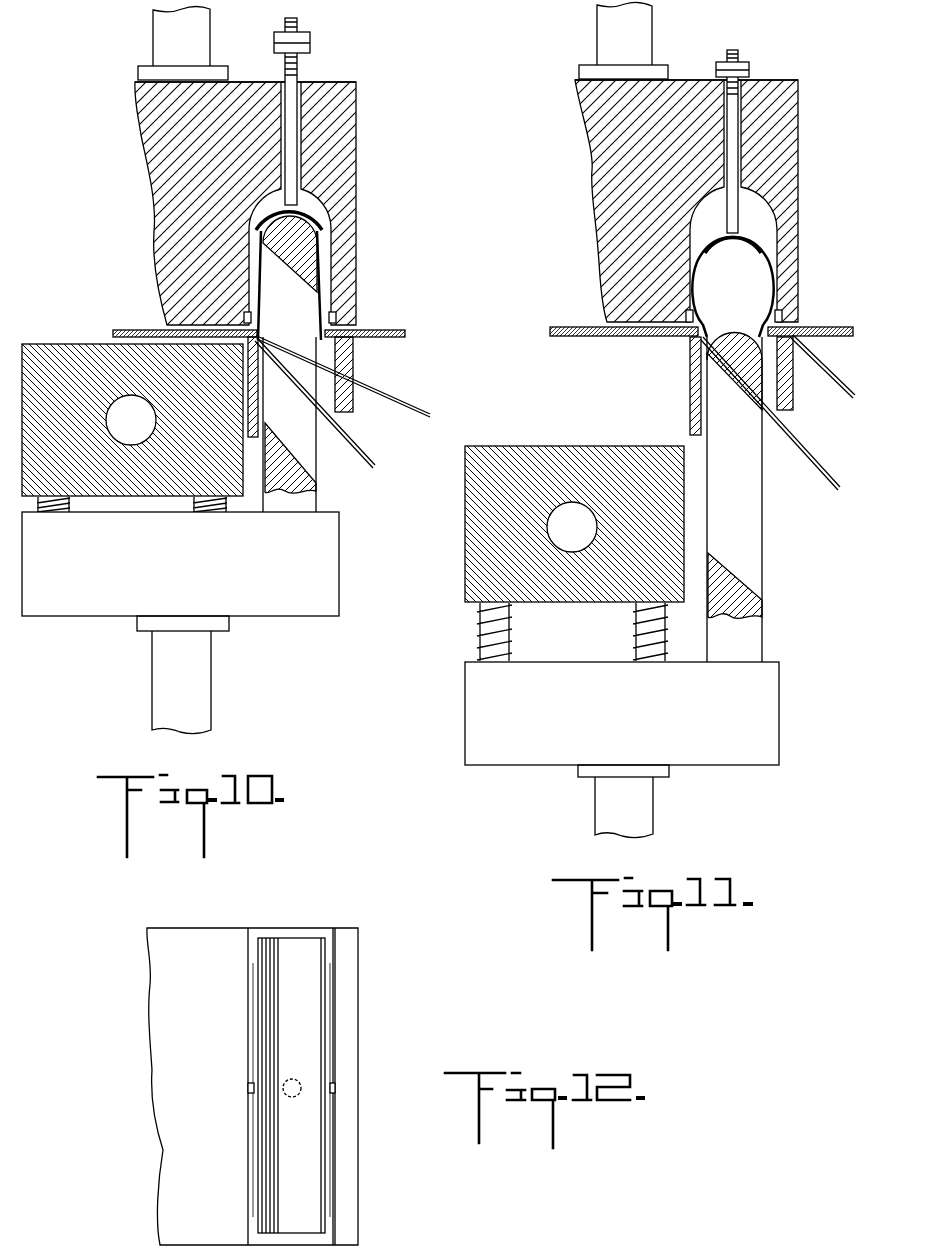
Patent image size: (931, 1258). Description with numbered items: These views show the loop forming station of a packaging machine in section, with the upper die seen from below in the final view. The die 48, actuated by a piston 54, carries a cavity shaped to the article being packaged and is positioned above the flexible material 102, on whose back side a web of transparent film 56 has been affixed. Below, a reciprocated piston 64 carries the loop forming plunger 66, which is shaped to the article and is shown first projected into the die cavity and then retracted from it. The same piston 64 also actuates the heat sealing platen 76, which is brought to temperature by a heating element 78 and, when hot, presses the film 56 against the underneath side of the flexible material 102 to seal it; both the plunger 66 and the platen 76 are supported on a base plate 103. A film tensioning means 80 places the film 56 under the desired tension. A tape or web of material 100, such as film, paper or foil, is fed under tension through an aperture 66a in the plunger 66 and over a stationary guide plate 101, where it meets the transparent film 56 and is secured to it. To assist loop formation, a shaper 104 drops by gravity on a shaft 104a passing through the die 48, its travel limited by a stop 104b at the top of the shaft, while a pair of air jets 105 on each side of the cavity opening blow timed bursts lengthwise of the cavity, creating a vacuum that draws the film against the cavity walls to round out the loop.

In FIG. 10, the die 48 is at (337, 108).
In FIG. 11, the die 48 is at (778, 150).
In FIG. 12, the die 48 is at (193, 957).
In FIG. 10, the piston 54 is at (168, 23).
In FIG. 11, the piston 54 is at (612, 23).
In FIG. 10, the web of transparent film 56 is at (393, 377).
In FIG. 11, the web of transparent film 56 is at (848, 400).
In FIG. 10, the reciprocated piston 64 is at (193, 698).
In FIG. 11, the reciprocated piston 64 is at (630, 812).
In FIG. 10, the loop forming plunger 66 is at (293, 247).
In FIG. 11, the loop forming plunger 66 is at (730, 355).
In FIG. 10, the aperture in the loop forming plunger 66a is at (305, 447).
In FIG. 11, the aperture in the loop forming plunger 66a is at (740, 518).
In FIG. 10, the heat sealing platen 76 is at (53, 350).
In FIG. 11, the heat sealing platen 76 is at (522, 452).
In FIG. 10, the heating element 78 is at (16, 519).
In FIG. 11, the heating element 78 is at (456, 626).
In FIG. 10, the film tensioning means 80 is at (343, 387).
In FIG. 11, the film tensioning means 80 is at (788, 398).
In FIG. 10, the tape or web of material 100 is at (375, 465).
In FIG. 11, the tape or web of material 100 is at (837, 487).
In FIG. 10, the stationary guide plate 101 is at (253, 388).
In FIG. 11, the stationary guide plate 101 is at (695, 397).
In FIG. 10, the flexible material 102 is at (385, 325).
In FIG. 11, the flexible material 102 is at (827, 330).
In FIG. 10, the base plate 103 is at (70, 603).
In FIG. 11, the base plate 103 is at (515, 750).
In FIG. 10, the shaper 104 is at (320, 220).
In FIG. 11, the shaper 104 is at (747, 238).
In FIG. 12, the shaper 104 is at (295, 997).
In FIG. 10, the shaft 104a is at (297, 77).
In FIG. 11, the shaft 104a is at (733, 122).
In FIG. 12, the shaft 104a is at (297, 1073).
In FIG. 10, the stop 104b is at (310, 37).
In FIG. 11, the stop 104b is at (750, 65).
In FIG. 10, the air jets 105 is at (251, 312).
In FIG. 11, the air jets 105 is at (690, 316).
In FIG. 12, the air jets 105 is at (247, 1087).